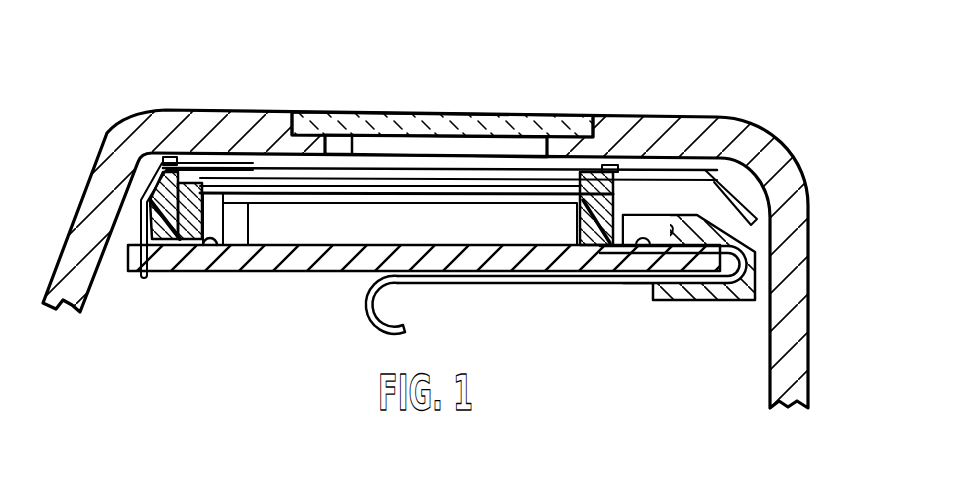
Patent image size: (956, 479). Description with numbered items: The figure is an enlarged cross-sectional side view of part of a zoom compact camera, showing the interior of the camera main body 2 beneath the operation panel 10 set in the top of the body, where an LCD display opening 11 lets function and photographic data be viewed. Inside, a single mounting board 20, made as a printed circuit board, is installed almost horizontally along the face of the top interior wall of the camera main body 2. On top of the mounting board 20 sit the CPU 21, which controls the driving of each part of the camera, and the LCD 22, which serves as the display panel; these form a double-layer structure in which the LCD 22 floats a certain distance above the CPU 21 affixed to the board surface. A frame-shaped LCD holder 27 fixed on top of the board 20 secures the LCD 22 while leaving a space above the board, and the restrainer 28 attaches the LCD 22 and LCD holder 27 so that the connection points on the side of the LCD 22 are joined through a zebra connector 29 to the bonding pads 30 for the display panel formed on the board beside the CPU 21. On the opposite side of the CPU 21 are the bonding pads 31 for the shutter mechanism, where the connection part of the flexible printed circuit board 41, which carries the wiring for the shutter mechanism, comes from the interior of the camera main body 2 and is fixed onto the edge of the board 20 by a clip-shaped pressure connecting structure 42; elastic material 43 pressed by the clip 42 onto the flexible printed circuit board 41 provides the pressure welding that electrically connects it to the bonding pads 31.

The camera main body 2 is at (797, 208).
The operation panel 10 is at (455, 215).
The LCD display opening 11 is at (506, 126).
The mounting board 20 is at (273, 258).
The CPU 21 is at (340, 222).
The LCD 22 is at (347, 178).
The LCD holder 27 is at (175, 157).
The restrainer 28 is at (244, 163).
The zebra connector 29 is at (180, 240).
The bonding pads for the display panel 30 is at (218, 247).
The bonding pads for the shutter mechanism 31 is at (628, 245).
The flexible printed circuit board 41 is at (387, 310).
The pressure connecting structure 42 is at (673, 297).
The elastic material 43 is at (664, 226).